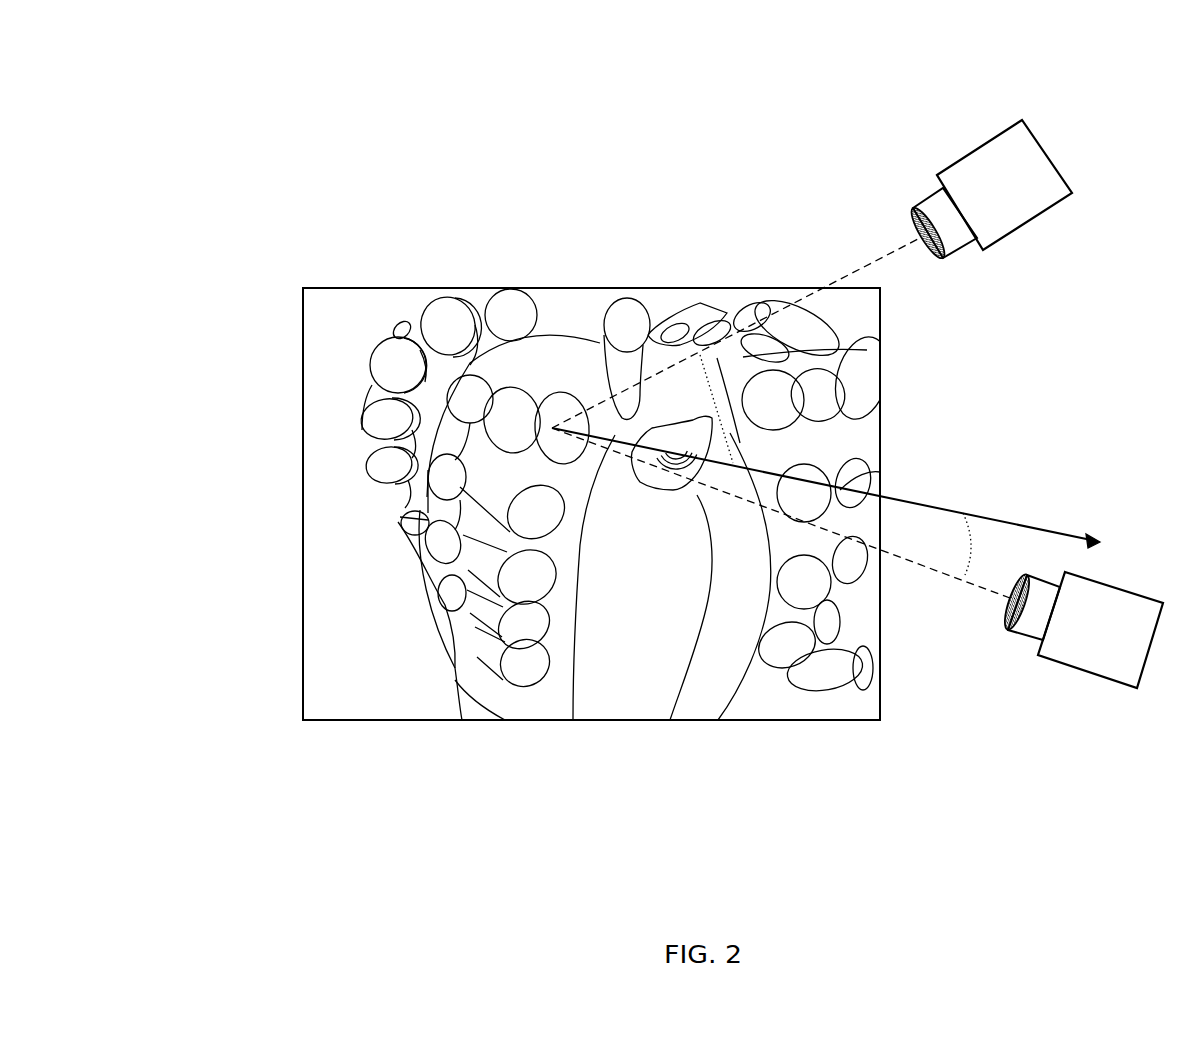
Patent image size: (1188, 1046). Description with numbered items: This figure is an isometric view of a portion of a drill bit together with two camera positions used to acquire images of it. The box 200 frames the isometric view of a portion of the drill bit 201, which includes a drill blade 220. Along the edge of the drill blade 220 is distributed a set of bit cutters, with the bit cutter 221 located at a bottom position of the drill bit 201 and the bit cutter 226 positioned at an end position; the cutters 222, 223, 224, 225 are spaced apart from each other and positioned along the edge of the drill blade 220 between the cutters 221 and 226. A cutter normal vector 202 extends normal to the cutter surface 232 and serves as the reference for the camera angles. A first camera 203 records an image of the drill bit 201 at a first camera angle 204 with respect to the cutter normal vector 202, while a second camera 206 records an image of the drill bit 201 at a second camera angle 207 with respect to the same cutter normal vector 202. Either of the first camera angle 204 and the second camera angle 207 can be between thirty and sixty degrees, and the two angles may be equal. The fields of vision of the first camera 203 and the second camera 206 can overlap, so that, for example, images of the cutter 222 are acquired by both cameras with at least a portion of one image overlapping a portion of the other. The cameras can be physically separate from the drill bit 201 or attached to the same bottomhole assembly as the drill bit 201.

The box 200 is at (348, 288).
The drill bit 201 is at (642, 680).
The cutter normal vector 202 is at (1072, 532).
The first camera 203 is at (1005, 128).
The first camera angle 204 is at (707, 377).
The second camera 206 is at (1100, 675).
The second camera angle 207 is at (965, 572).
The drill blade 220 is at (463, 442).
The bit cutter 221 is at (573, 342).
The bit cutter 222 is at (535, 405).
The bit cutter 223 is at (510, 505).
The bit cutter 224 is at (500, 578).
The bit cutter 225 is at (503, 623).
The bit cutter 226 is at (502, 668).
The cutter surface 232 is at (560, 415).